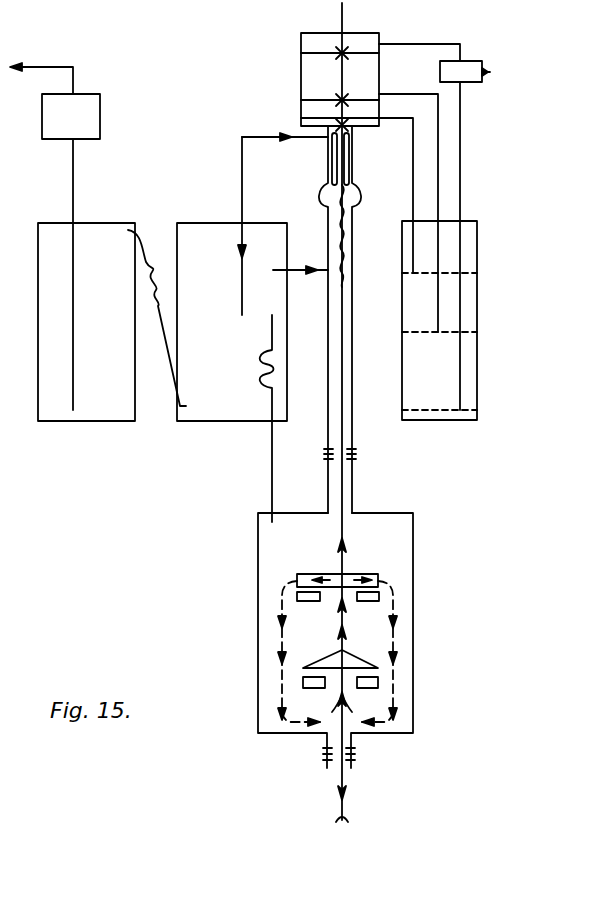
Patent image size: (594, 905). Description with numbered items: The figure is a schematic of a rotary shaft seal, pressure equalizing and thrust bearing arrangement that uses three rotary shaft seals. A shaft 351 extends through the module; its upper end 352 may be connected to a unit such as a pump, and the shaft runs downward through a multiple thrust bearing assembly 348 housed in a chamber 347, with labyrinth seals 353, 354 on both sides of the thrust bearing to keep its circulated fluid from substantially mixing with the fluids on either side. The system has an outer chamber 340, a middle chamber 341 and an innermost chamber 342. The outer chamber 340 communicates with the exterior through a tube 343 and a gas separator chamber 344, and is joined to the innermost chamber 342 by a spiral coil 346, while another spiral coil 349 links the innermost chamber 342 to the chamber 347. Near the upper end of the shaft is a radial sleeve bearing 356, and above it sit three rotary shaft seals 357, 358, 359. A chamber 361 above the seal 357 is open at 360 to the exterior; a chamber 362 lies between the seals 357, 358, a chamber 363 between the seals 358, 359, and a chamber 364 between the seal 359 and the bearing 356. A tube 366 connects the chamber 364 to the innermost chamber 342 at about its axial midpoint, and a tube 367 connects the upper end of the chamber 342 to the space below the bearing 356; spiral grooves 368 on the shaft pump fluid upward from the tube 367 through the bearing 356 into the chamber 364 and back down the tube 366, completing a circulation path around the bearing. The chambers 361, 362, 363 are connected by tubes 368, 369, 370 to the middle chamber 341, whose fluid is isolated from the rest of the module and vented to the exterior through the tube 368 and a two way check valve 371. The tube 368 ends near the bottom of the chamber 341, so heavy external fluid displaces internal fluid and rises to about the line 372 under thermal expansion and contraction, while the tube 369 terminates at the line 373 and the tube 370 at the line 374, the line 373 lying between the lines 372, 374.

The outer chamber 340 is at (105, 422).
The middle chamber 341 is at (465, 421).
The innermost chamber 342 is at (230, 422).
The tube 343 is at (74, 367).
The gas separator chamber 344 is at (103, 112).
The spiral coil 346 is at (163, 245).
The chamber 347 is at (262, 566).
The multiple thrust bearing assembly 348 is at (256, 642).
The spiral coil 349 is at (262, 368).
The shaft 351 is at (353, 500).
The upper end of the shaft 352 is at (343, 15).
The labyrinth seal 353 is at (357, 453).
The labyrinth seal 354 is at (356, 766).
The radial sleeve bearing 356 is at (350, 153).
The rotary shaft seal 357 is at (334, 54).
The rotary shaft seal 358 is at (334, 100).
The rotary shaft seal 359 is at (334, 122).
The opening 360 is at (303, 32).
The chamber 361 is at (381, 42).
The chamber 362 is at (403, 76).
The chamber 363 is at (381, 116).
The chamber 364 is at (326, 138).
The tube 366 is at (241, 163).
The tube 367 is at (298, 266).
The spiral grooves 368 is at (461, 147).
The tube 369 is at (439, 170).
The tube 370 is at (414, 201).
The two way check valve 371 is at (492, 72).
The line 372 is at (466, 410).
The line 373 is at (466, 332).
The line 374 is at (466, 273).